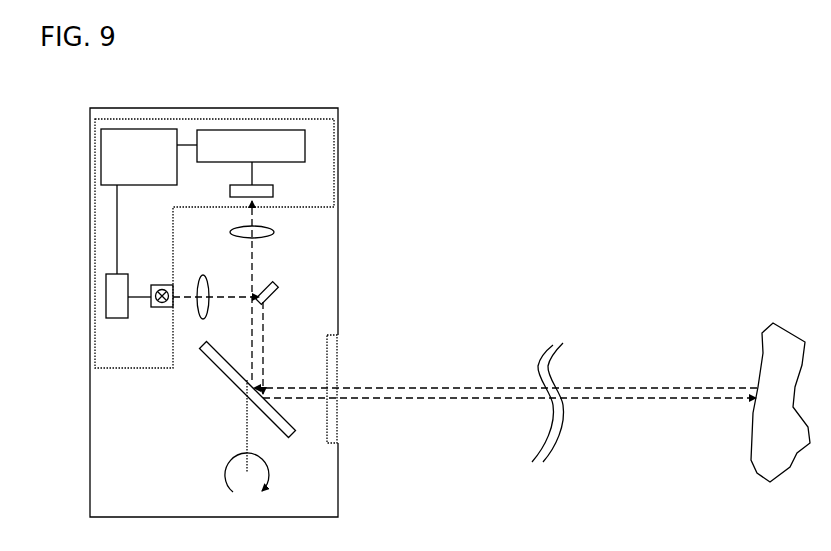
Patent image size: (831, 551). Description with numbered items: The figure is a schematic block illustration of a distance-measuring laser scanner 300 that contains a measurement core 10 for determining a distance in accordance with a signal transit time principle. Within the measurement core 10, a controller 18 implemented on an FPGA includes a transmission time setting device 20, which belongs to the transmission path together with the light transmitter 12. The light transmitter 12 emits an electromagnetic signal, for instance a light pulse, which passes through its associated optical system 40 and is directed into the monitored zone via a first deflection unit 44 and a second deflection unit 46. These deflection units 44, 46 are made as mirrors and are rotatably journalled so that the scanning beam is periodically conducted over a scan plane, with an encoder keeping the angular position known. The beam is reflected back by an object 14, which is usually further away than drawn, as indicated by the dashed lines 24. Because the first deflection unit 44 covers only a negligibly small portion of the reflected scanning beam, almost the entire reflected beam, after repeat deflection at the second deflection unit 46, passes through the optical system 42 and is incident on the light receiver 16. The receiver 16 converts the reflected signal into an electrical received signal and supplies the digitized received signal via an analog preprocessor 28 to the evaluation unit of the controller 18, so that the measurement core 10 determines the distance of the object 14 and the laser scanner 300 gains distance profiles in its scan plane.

The laser scanner 300 is at (257, 110).
The measurement core 10 is at (89, 368).
The controller 18 is at (122, 130).
The analog preprocessor 28 is at (305, 142).
The receiver 16 is at (266, 193).
The transmission time setting device 20 is at (106, 294).
The sensor 12 is at (162, 308).
The optical system 40 is at (198, 274).
The optical system 42 is at (272, 235).
The first deflection unit 44 is at (277, 288).
The second deflection unit 46 is at (226, 391).
The dashed lines 24 is at (543, 347).
The object 14 is at (780, 347).